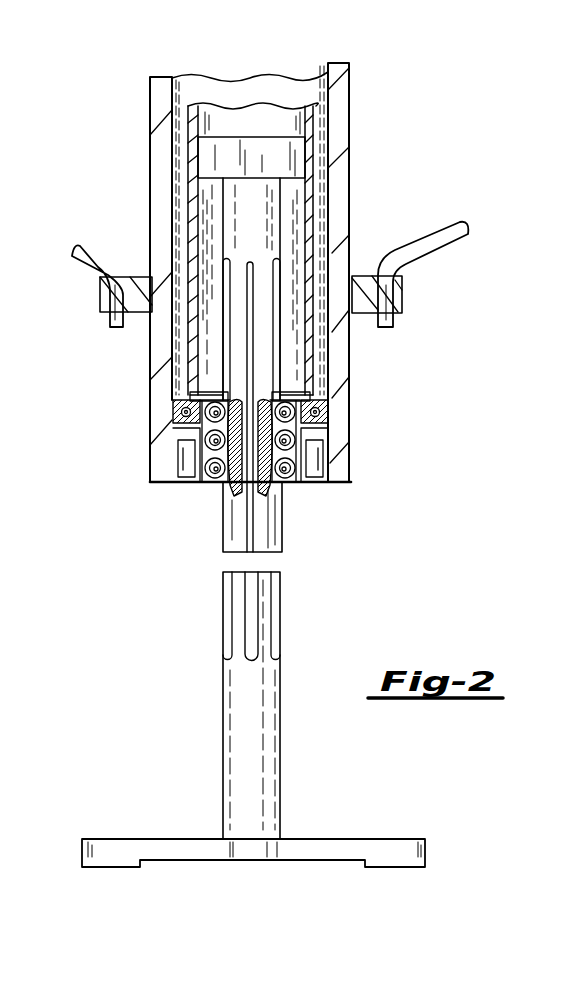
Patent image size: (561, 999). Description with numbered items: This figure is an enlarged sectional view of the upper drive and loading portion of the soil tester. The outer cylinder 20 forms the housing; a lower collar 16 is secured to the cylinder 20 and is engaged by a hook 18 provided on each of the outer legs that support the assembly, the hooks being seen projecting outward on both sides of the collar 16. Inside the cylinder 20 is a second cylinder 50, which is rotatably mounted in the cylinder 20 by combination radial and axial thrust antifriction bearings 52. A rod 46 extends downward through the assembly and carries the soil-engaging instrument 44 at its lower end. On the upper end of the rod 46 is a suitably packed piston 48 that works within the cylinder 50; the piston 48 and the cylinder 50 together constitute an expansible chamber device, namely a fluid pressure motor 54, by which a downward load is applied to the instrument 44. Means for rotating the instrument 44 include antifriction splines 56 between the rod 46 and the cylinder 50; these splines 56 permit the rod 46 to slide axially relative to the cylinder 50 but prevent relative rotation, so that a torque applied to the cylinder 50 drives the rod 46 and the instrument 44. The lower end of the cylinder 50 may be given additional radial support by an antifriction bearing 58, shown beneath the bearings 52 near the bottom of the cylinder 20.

The lower collar 16 is at (404, 290).
The hook 18 is at (82, 262).
The cylinder 20 is at (287, 82).
The soil-engaging instrument 44 is at (259, 855).
The rod 46 is at (224, 538).
The piston 48 is at (226, 140).
The cylinder 50 is at (200, 104).
The bearings 52 is at (174, 410).
The fluid pressure motor 54 is at (284, 127).
The antifriction splines 56 is at (287, 485).
The antifriction bearing 58 is at (183, 483).